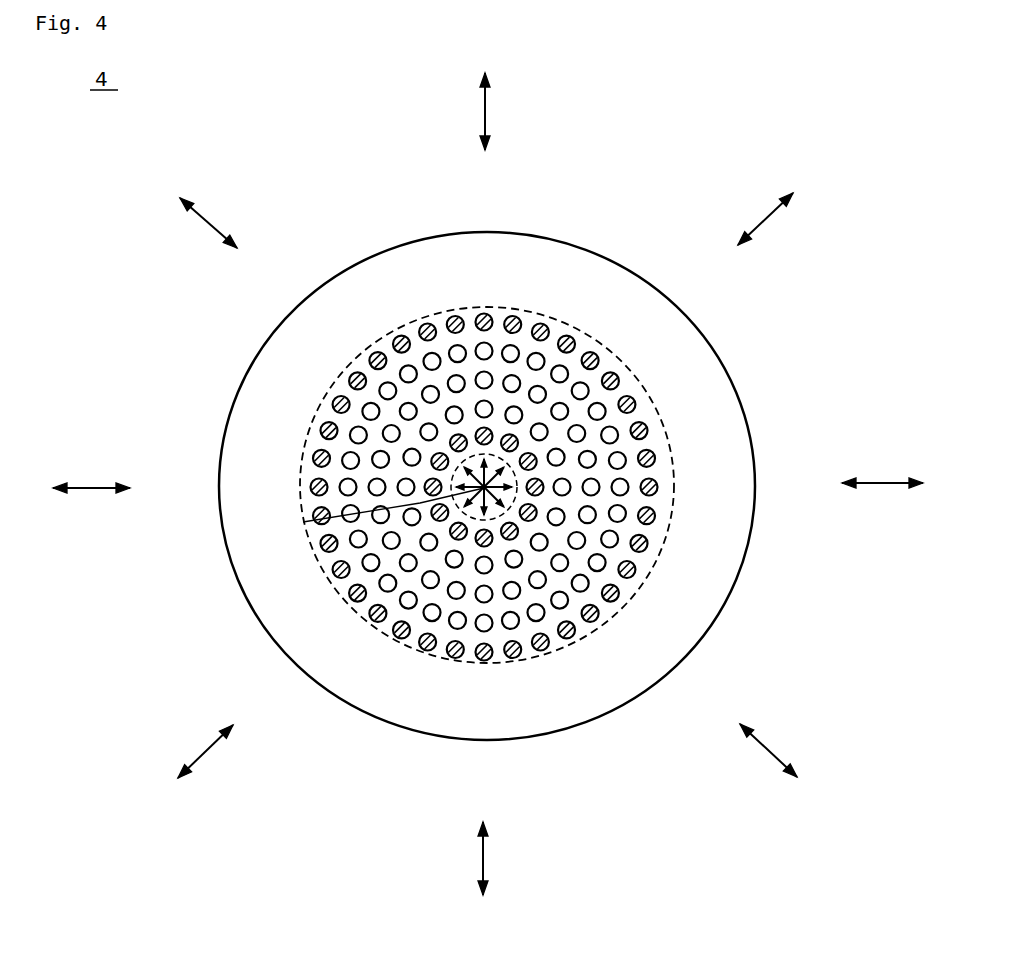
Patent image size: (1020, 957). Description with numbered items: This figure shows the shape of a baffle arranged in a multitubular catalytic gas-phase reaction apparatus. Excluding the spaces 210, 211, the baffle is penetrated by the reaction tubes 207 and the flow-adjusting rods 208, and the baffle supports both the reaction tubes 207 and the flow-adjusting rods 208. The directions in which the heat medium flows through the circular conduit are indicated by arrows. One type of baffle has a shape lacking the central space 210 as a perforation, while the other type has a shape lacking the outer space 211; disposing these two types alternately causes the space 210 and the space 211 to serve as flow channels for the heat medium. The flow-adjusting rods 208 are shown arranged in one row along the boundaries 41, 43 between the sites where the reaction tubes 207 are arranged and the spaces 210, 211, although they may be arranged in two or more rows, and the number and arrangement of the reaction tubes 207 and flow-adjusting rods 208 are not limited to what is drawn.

The boundary 41 is at (484, 487).
The boundary 43 is at (650, 397).
The reaction tubes 207 is at (455, 622).
The flow-adjusting rods 208 is at (512, 538).
The space 210 is at (303, 522).
The space 211 is at (260, 457).